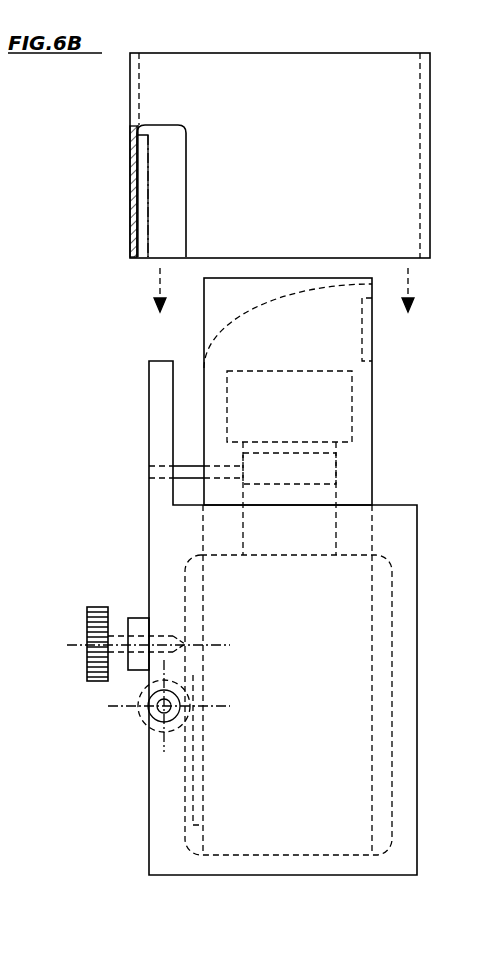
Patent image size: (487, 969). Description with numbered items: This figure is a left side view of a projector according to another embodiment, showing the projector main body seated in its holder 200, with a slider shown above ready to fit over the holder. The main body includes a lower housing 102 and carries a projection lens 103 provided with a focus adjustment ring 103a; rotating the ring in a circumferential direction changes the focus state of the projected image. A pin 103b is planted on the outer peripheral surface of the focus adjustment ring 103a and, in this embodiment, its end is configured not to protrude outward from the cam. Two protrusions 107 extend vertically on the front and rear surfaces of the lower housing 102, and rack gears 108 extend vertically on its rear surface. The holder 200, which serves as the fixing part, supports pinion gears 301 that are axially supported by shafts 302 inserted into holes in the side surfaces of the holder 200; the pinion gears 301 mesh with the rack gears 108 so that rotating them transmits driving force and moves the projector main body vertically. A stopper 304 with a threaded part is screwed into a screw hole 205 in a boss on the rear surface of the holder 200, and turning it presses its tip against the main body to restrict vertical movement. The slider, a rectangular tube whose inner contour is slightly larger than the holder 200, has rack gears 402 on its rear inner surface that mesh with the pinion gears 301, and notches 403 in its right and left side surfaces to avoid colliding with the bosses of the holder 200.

The lower housing 102 is at (348, 702).
The projection lens 103 is at (345, 400).
The focus adjustment ring 103a is at (327, 465).
The pin 103b is at (192, 472).
The protrusions 107 is at (383, 612).
The rack gears 108 is at (200, 783).
The holder 200 is at (407, 805).
The screw hole 205 is at (143, 630).
The pinion gears 301 is at (147, 727).
The shafts 302 is at (178, 696).
The stopper 304 is at (96, 607).
The rack gears 402 is at (150, 217).
The notches 403 is at (175, 153).